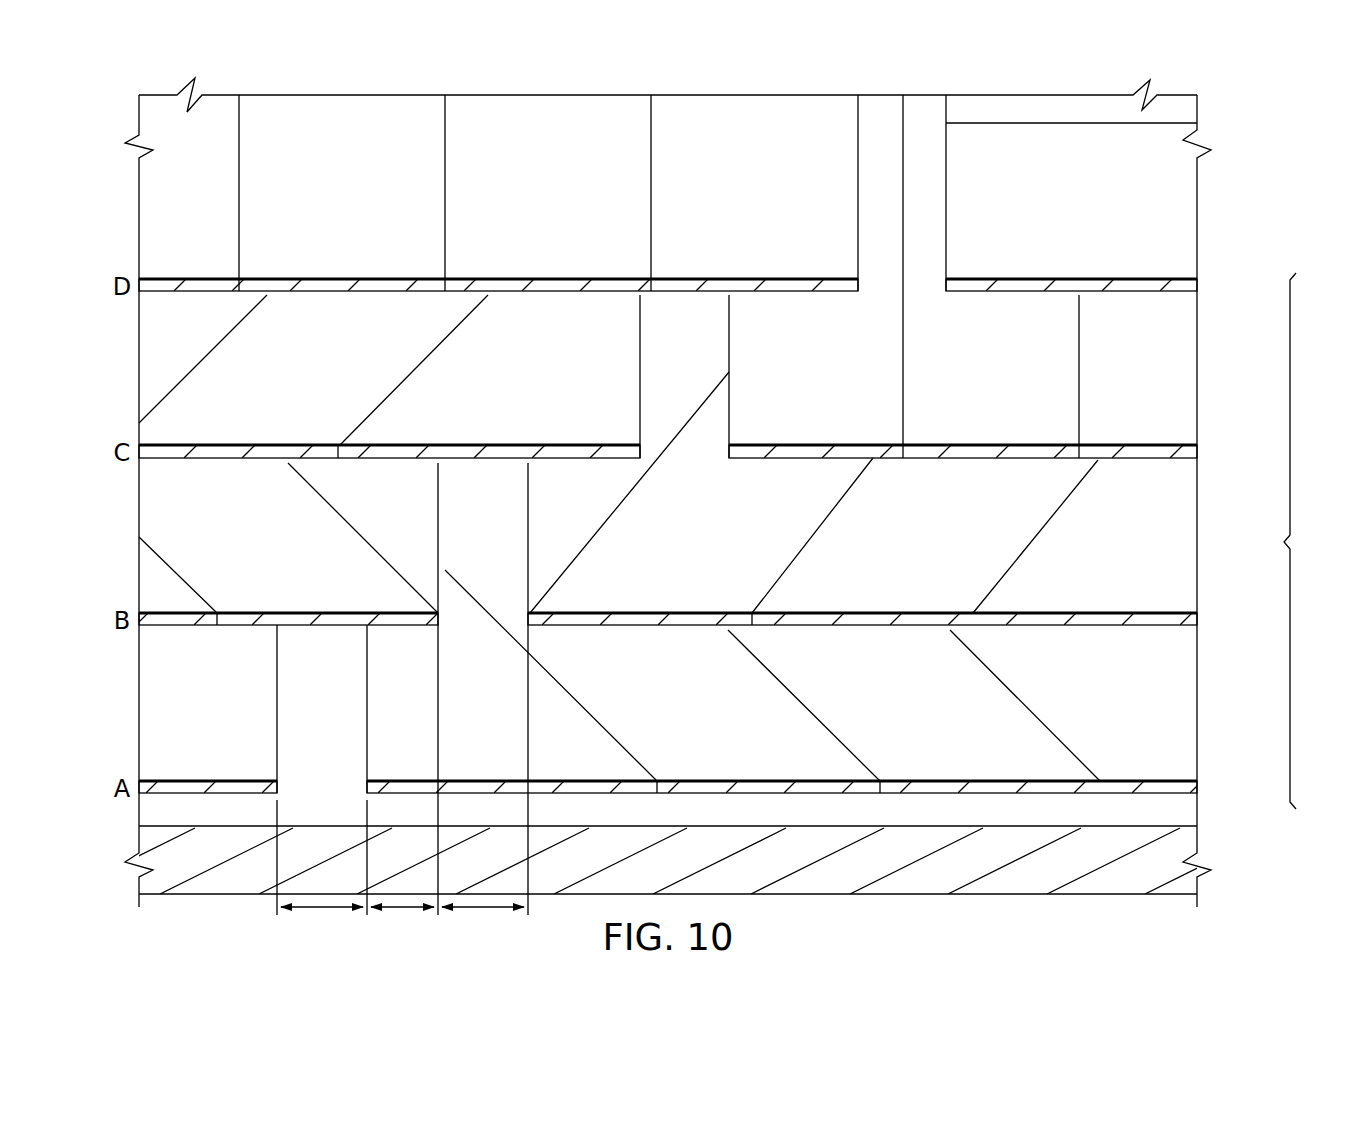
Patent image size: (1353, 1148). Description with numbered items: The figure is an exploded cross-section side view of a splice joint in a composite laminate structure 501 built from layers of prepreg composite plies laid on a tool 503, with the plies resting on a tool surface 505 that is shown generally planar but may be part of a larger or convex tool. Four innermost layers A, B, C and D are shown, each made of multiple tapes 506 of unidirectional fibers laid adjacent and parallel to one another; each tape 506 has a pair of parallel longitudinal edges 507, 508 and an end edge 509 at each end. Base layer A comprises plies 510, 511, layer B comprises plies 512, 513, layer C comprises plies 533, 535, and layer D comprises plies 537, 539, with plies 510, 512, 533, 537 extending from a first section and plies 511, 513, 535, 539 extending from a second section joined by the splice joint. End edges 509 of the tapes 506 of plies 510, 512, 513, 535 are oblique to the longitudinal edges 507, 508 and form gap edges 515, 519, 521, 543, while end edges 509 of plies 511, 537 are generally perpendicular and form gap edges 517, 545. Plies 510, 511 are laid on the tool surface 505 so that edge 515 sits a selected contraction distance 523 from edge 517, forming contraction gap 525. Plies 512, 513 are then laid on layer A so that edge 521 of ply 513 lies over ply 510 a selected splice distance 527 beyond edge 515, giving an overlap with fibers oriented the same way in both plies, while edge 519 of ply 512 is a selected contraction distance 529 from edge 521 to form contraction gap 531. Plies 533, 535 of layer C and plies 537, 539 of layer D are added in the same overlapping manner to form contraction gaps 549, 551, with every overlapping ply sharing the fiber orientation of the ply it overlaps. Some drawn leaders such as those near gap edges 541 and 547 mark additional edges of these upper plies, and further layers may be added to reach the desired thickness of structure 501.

The composite laminate structure 501 is at (1315, 541).
The tool 503 is at (906, 897).
The tool surface 505 is at (1100, 827).
The tape 506 is at (340, 113).
The longitudinal edge 507 is at (858, 136).
The longitudinal edge 508 is at (239, 188).
The end edge 509 is at (343, 283).
The ply 510 is at (945, 797).
The ply 511 is at (220, 797).
The ply 512 is at (1115, 630).
The ply 513 is at (245, 630).
The gap edge 515 is at (364, 771).
The gap edge 517 is at (280, 771).
The gap edge 519 is at (521, 503).
The gap edge 521 is at (440, 528).
The contraction distance 523 is at (320, 912).
The contraction gap 525 is at (335, 643).
The splice distance 527 is at (403, 912).
The contraction distance 529 is at (490, 912).
The contraction gap 531 is at (470, 476).
The ply 533 is at (1140, 464).
The ply 535 is at (230, 464).
The ply 537 is at (1112, 294).
The ply 539 is at (290, 294).
The sidewall 541 is at (726, 366).
The gap edge 543 is at (642, 392).
The gap edge 545 is at (945, 205).
The sidewall 547 is at (860, 200).
The contraction gap 549 is at (687, 310).
The contraction gap 551 is at (922, 113).